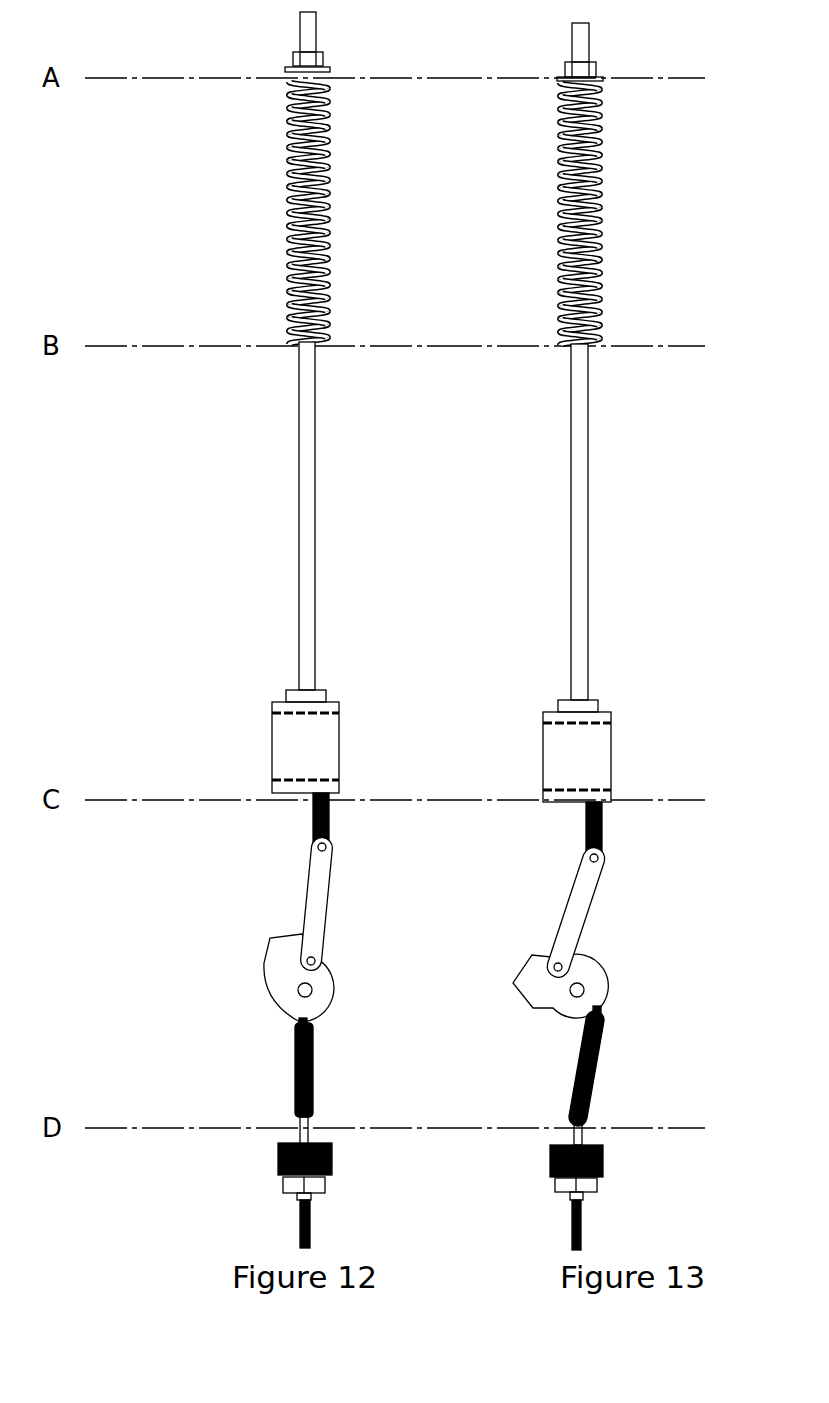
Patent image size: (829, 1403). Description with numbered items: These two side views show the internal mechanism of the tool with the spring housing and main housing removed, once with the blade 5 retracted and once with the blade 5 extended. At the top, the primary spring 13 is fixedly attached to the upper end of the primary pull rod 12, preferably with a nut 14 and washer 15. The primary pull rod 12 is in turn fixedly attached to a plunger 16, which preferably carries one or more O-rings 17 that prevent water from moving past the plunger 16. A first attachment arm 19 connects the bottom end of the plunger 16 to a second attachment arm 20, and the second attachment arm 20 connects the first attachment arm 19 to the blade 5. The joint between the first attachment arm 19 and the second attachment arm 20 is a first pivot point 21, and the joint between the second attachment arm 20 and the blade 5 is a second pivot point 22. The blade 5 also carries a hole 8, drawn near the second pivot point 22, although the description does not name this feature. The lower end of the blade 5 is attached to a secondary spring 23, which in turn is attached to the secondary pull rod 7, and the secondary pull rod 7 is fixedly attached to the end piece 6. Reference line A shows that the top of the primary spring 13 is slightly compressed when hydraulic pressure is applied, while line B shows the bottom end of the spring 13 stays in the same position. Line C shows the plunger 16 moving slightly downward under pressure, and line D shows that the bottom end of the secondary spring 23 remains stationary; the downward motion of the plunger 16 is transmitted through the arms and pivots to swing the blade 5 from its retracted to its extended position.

In FIG. 12, the blade 5 is at (285, 982).
In FIG. 13, the blade 5 is at (592, 965).
In FIG. 12, the end piece 6 is at (290, 1182).
In FIG. 13, the end piece 6 is at (585, 1185).
In FIG. 12, the secondary pull rod 7 is at (310, 1225).
In FIG. 13, the secondary pull rod 7 is at (582, 1235).
In FIG. 12, the cam pivot hole 8 is at (298, 990).
In FIG. 13, the cam pivot hole 8 is at (585, 990).
In FIG. 12, the primary pull rod 12 is at (307, 510).
In FIG. 13, the primary pull rod 12 is at (586, 577).
In FIG. 12, the primary spring 13 is at (292, 225).
In FIG. 13, the primary spring 13 is at (600, 240).
In FIG. 12, the nut 14 is at (322, 58).
In FIG. 13, the nut 14 is at (580, 68).
In FIG. 12, the washer 15 is at (290, 68).
In FIG. 13, the washer 15 is at (603, 78).
In FIG. 12, the plunger 16 is at (320, 752).
In FIG. 13, the plunger 16 is at (555, 760).
In FIG. 12, the O-rings 17 is at (272, 780).
In FIG. 13, the O-rings 17 is at (611, 723).
In FIG. 12, the first attachment arm 19 is at (313, 823).
In FIG. 13, the first attachment arm 19 is at (603, 827).
In FIG. 12, the second attachment arm 20 is at (320, 905).
In FIG. 13, the second attachment arm 20 is at (582, 905).
In FIG. 12, the first pivot point 21 is at (318, 848).
In FIG. 13, the first pivot point 21 is at (590, 858).
In FIG. 12, the second pivot point 22 is at (308, 958).
In FIG. 13, the second pivot point 22 is at (556, 965).
In FIG. 12, the secondary spring 23 is at (296, 1080).
In FIG. 13, the secondary spring 23 is at (590, 1070).